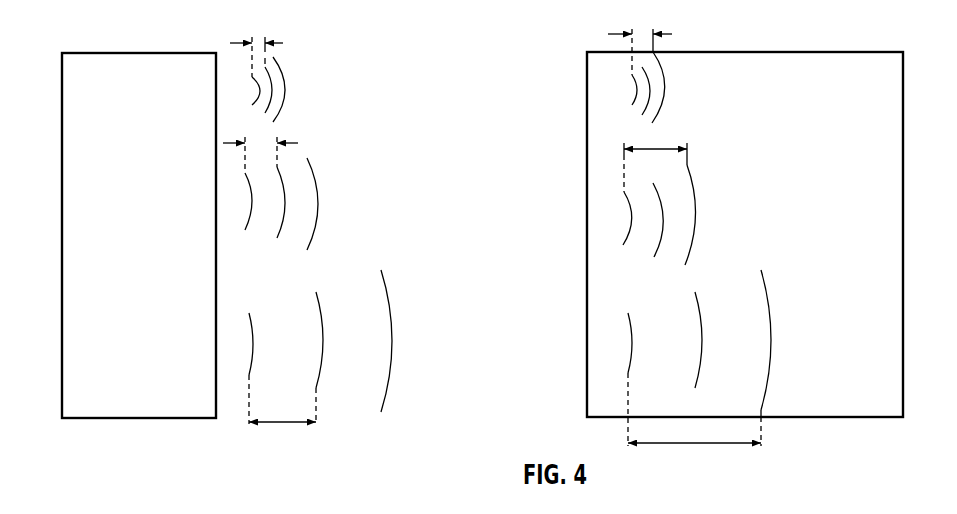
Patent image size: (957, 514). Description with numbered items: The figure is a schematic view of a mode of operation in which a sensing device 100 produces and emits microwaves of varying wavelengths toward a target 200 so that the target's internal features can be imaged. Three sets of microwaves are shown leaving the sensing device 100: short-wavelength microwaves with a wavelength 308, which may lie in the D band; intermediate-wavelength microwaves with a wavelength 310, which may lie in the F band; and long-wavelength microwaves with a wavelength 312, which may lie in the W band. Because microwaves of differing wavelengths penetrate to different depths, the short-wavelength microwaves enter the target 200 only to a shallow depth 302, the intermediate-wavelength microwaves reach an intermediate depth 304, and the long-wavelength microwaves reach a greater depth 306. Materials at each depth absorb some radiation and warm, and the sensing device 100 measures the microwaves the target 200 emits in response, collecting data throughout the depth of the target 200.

The sensing device 100 is at (173, 51).
The target 200 is at (841, 42).
The shallow depth 302 is at (669, 34).
The intermediate depth 304 is at (664, 149).
The greater depth 306 is at (692, 443).
The wavelength 308 is at (282, 43).
The wavelength 310 is at (291, 143).
The wavelength 312 is at (287, 422).